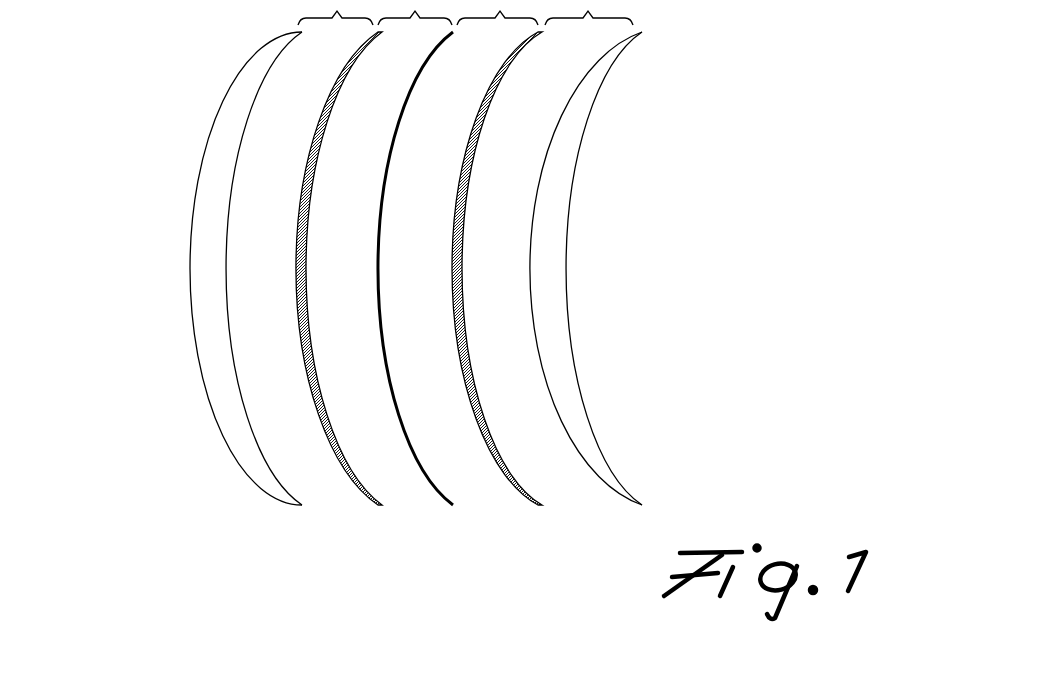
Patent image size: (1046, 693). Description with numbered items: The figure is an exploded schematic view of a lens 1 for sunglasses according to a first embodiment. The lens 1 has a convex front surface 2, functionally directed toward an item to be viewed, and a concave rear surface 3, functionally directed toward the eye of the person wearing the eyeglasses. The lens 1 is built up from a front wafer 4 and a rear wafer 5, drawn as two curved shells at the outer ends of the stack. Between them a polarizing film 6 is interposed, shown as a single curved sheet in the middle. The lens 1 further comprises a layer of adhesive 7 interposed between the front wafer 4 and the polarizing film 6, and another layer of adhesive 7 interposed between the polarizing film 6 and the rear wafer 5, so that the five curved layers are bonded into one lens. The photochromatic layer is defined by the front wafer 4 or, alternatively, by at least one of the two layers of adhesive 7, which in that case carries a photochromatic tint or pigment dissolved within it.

The lens 1 is at (404, 325).
The front surface 2 is at (178, 268).
The rear surface 3 is at (616, 268).
The front wafer 4 is at (210, 308).
The rear wafer 5 is at (557, 180).
The polarizing film 6 is at (426, 482).
The layer of adhesive 7 is at (348, 482).